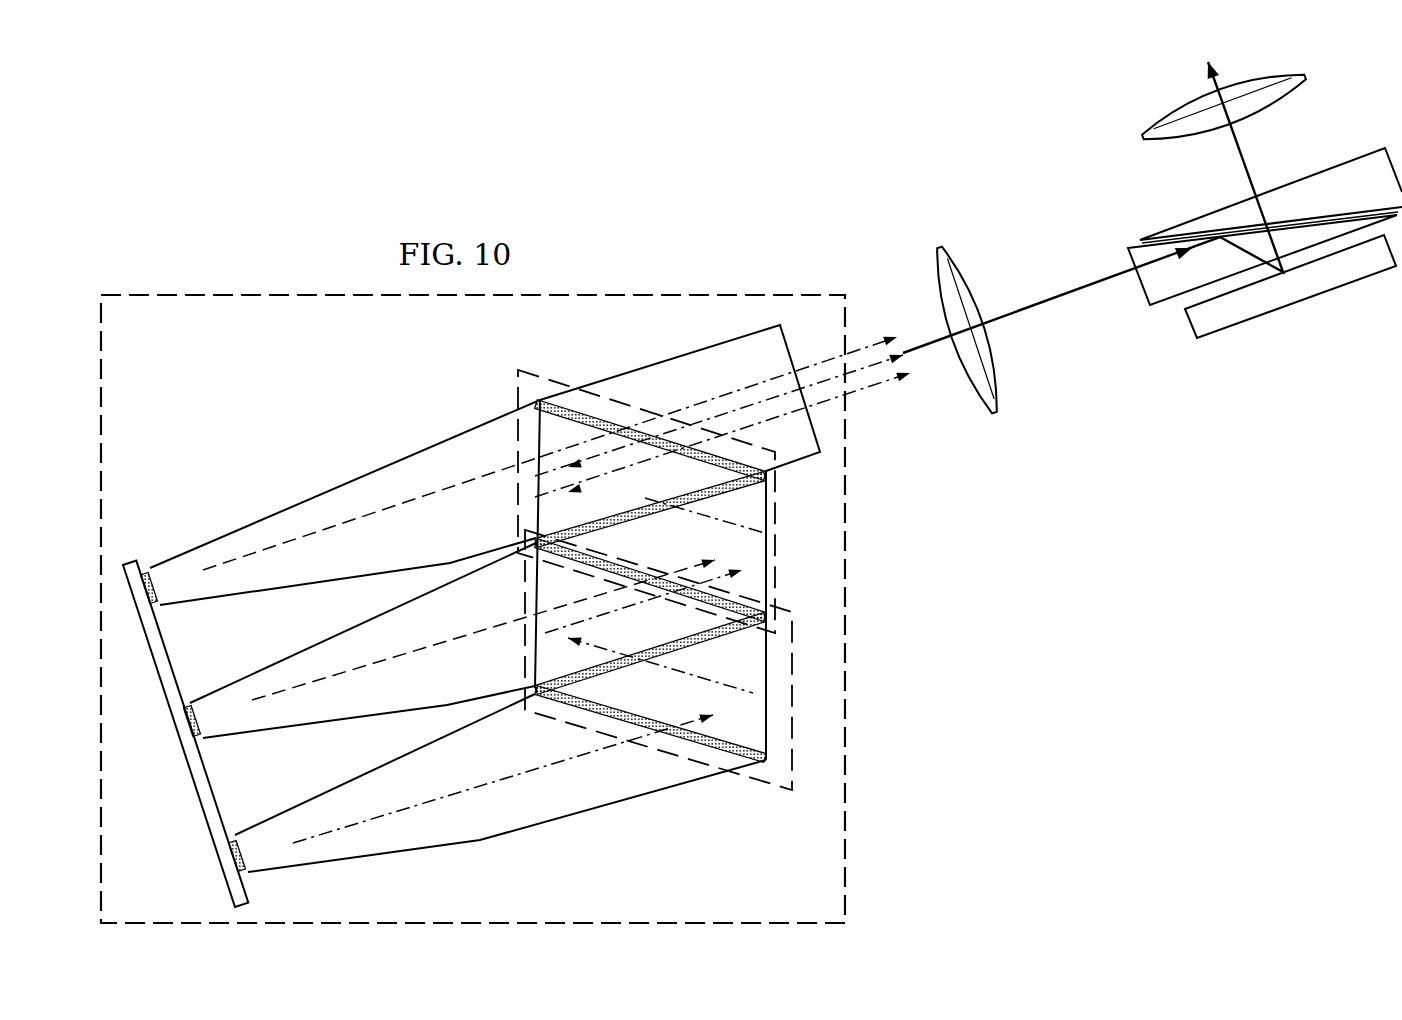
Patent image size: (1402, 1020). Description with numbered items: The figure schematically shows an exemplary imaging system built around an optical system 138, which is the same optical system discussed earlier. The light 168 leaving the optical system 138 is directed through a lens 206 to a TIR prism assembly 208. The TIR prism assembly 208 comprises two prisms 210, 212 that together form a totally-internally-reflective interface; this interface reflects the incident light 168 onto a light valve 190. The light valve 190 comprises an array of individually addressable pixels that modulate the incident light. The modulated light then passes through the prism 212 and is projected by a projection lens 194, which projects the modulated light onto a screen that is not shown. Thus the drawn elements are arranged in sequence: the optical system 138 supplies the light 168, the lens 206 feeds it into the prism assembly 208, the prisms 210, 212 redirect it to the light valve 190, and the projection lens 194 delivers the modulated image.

The optical system 138 is at (242, 405).
The light 168 is at (886, 402).
The light valve 190 is at (1335, 288).
The projection lens 194 is at (1170, 108).
The lens 206 is at (942, 262).
The TIR prism assembly 208 is at (1118, 221).
The prism 210 is at (1142, 290).
The prism 212 is at (1318, 172).